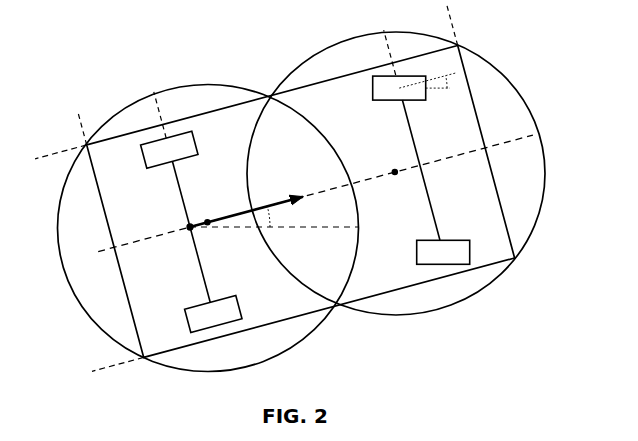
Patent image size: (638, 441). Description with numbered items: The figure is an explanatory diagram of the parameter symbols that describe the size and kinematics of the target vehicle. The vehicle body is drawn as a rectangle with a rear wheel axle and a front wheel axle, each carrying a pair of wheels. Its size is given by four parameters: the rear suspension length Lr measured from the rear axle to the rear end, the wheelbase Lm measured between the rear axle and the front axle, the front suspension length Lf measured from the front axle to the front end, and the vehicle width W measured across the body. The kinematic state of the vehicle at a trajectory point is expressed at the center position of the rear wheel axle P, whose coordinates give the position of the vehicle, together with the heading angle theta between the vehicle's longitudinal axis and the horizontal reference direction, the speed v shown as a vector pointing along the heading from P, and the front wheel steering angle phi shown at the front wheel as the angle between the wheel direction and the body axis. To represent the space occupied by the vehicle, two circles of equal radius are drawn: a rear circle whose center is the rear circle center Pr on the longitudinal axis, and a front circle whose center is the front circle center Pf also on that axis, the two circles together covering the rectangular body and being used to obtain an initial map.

The rear suspension length Lr is at (155, 97).
The wheelbase Lm is at (385, 35).
The front suspension length Lf is at (450, 18).
The vehicle width W is at (51, 154).
The center position of rear wheel axle P is at (178, 219).
The rear circle center Pr is at (206, 211).
The front circle center Pf is at (395, 172).
The speed v is at (246, 201).
The heading angle theta is at (289, 215).
The front wheel steering angle phi is at (428, 91).